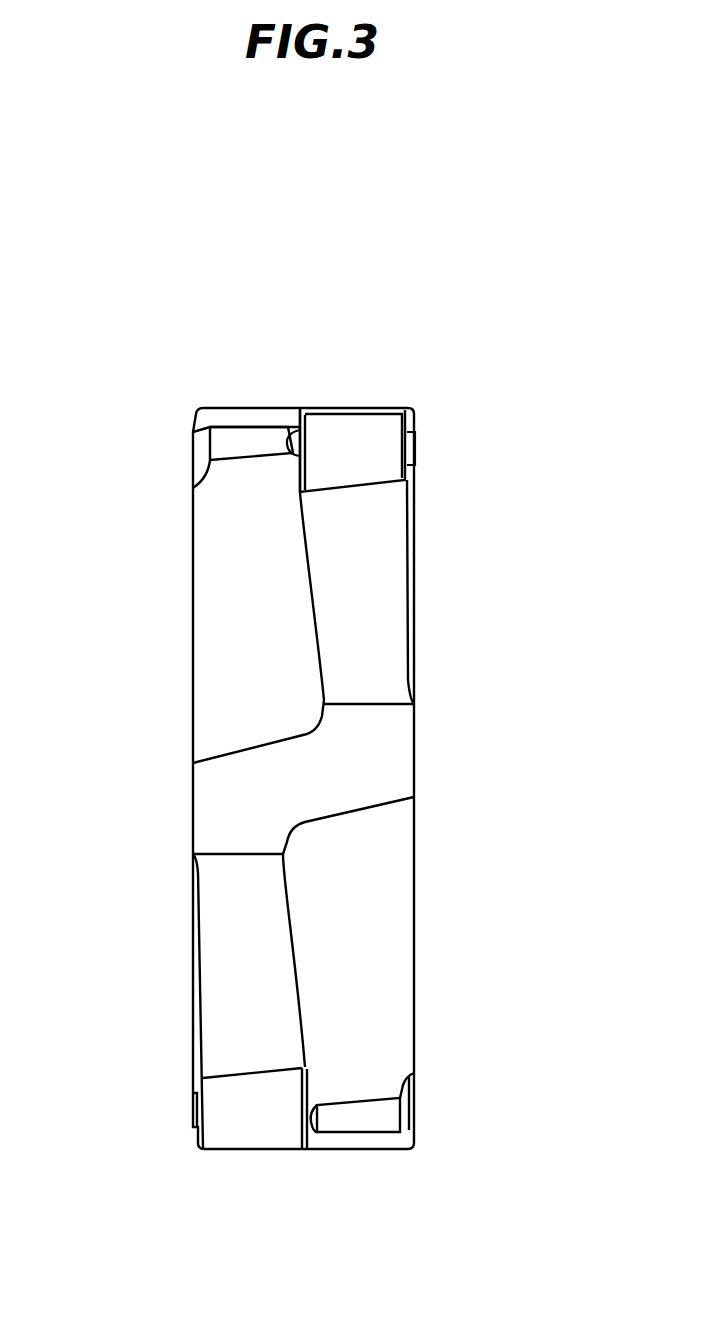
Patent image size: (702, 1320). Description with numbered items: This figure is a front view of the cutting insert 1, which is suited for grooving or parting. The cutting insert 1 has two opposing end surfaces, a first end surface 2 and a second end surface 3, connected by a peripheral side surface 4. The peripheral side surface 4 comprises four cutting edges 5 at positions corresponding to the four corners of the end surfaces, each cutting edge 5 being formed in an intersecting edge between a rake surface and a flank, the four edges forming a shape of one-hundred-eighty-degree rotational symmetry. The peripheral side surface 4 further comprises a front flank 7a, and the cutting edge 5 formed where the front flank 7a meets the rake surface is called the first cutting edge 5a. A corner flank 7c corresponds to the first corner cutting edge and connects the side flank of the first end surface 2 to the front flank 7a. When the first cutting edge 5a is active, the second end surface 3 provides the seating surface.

The cutting insert 1 is at (168, 525).
The first end surface 2 is at (414, 755).
The second end surface 3 is at (193, 800).
The peripheral side surface 4 is at (257, 408).
The cutting edge 5 is at (334, 410).
The first cutting edge 5a is at (370, 406).
The front flank 7a is at (355, 450).
The corner flank 7c is at (295, 433).